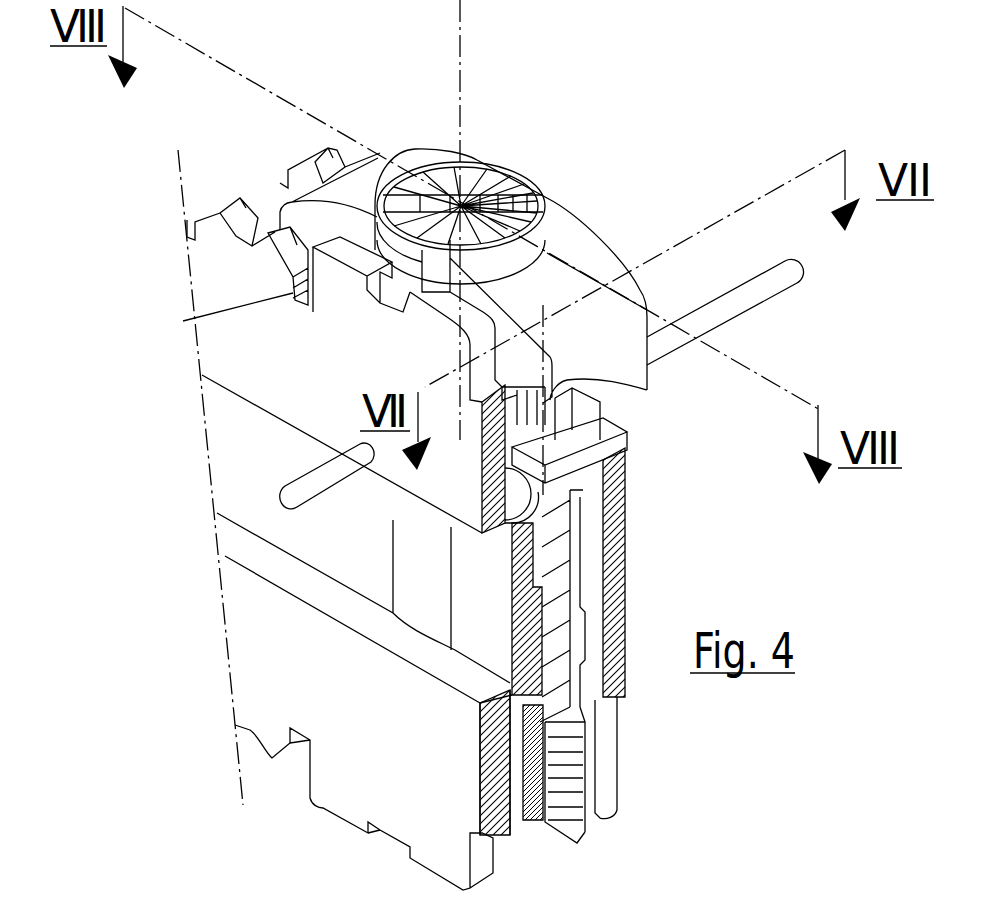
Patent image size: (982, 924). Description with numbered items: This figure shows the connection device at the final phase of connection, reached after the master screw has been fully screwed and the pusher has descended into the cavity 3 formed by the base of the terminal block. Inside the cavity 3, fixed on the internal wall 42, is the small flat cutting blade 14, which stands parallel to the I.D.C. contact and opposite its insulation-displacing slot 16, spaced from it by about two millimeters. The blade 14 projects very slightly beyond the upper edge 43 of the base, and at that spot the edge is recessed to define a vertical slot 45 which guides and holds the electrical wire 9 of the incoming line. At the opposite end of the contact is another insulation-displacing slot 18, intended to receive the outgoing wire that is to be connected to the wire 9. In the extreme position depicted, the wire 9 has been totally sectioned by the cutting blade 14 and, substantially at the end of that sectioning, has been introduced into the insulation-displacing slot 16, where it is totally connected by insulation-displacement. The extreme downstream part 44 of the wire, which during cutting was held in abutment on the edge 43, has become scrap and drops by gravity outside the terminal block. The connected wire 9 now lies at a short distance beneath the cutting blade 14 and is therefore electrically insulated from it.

The electrical strand or wire 9 is at (753, 275).
The vertical slot 45 is at (183, 321).
The upper edge of the base 43 is at (480, 403).
The extreme downstream part of the wire 44 is at (300, 469).
The internal wall of the cavity 42 is at (485, 510).
The cutting blade 14 is at (645, 393).
The insulation-displacing slot 16 is at (623, 482).
The cavity 3 is at (595, 533).
The insulation-displacing slot 18 is at (510, 763).